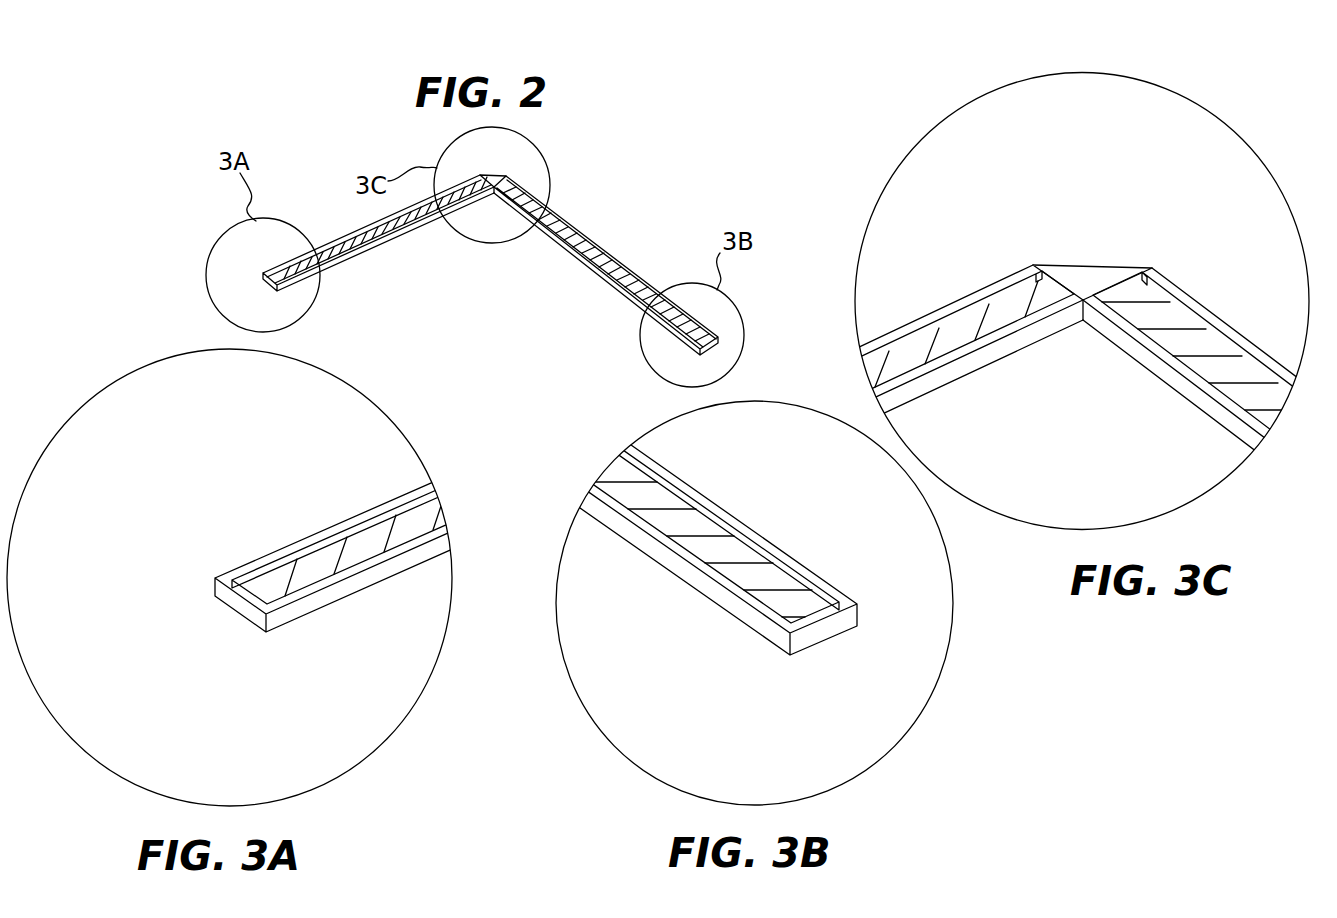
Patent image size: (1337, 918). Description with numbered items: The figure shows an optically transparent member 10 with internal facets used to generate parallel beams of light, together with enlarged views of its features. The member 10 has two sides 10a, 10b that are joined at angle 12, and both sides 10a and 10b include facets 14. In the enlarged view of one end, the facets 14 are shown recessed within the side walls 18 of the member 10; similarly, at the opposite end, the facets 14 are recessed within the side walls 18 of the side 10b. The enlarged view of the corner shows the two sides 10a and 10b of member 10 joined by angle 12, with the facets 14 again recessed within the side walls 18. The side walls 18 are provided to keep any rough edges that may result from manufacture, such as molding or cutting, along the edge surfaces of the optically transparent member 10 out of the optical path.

In FIG. 2, the optically transparent member 10 is at (292, 144).
In FIG. 2, the side 10a is at (350, 259).
In FIG. 3A, the side 10a is at (339, 584).
In FIG. 3C, the side 10a is at (1067, 333).
In FIG. 2, the side 10b is at (596, 275).
In FIG. 3B, the side 10b is at (685, 549).
In FIG. 3C, the side 10b is at (1173, 287).
In FIG. 2, the angle 12 is at (500, 177).
In FIG. 3C, the angle 12 is at (1085, 277).
In FIG. 2, the facets 14 is at (398, 228).
In FIG. 3A, the facets 14 is at (312, 546).
In FIG. 3B, the facets 14 is at (757, 563).
In FIG. 3C, the facets 14 is at (995, 330).
In FIG. 3A, the side walls 18 is at (260, 543).
In FIG. 3B, the side walls 18 is at (822, 585).
In FIG. 3C, the side walls 18 is at (1002, 285).